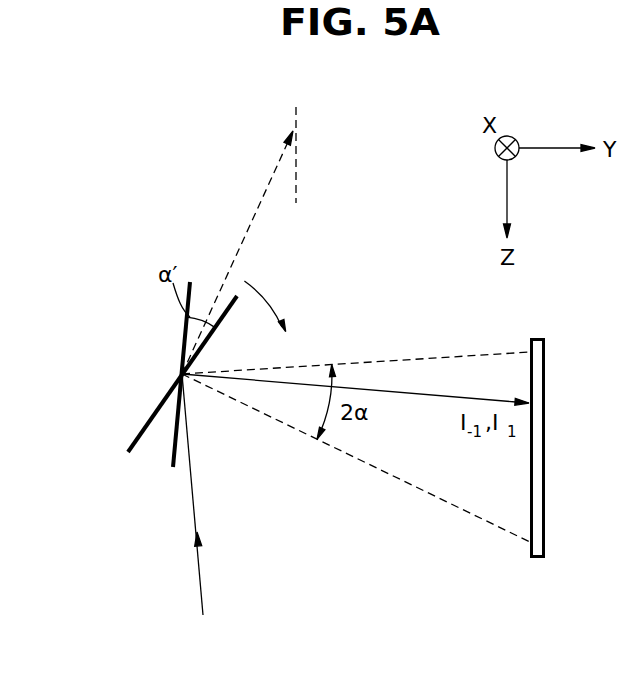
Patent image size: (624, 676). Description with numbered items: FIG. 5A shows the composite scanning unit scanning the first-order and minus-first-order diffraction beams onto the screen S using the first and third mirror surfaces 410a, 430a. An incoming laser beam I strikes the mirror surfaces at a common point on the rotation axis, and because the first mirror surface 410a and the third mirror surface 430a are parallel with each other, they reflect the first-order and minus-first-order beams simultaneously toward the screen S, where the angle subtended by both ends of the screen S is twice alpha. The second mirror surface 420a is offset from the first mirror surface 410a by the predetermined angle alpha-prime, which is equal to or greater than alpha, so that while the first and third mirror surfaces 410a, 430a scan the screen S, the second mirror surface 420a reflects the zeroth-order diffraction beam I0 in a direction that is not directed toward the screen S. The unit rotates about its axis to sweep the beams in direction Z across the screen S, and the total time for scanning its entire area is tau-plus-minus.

The first mirror surface 410a is at (142, 430).
The third mirror surface 430a is at (131, 381).
The second mirror surface 420a is at (174, 448).
The screen S is at (541, 351).
The incident light I is at (204, 494).
The zeroth-order diffraction beam I0 is at (239, 240).